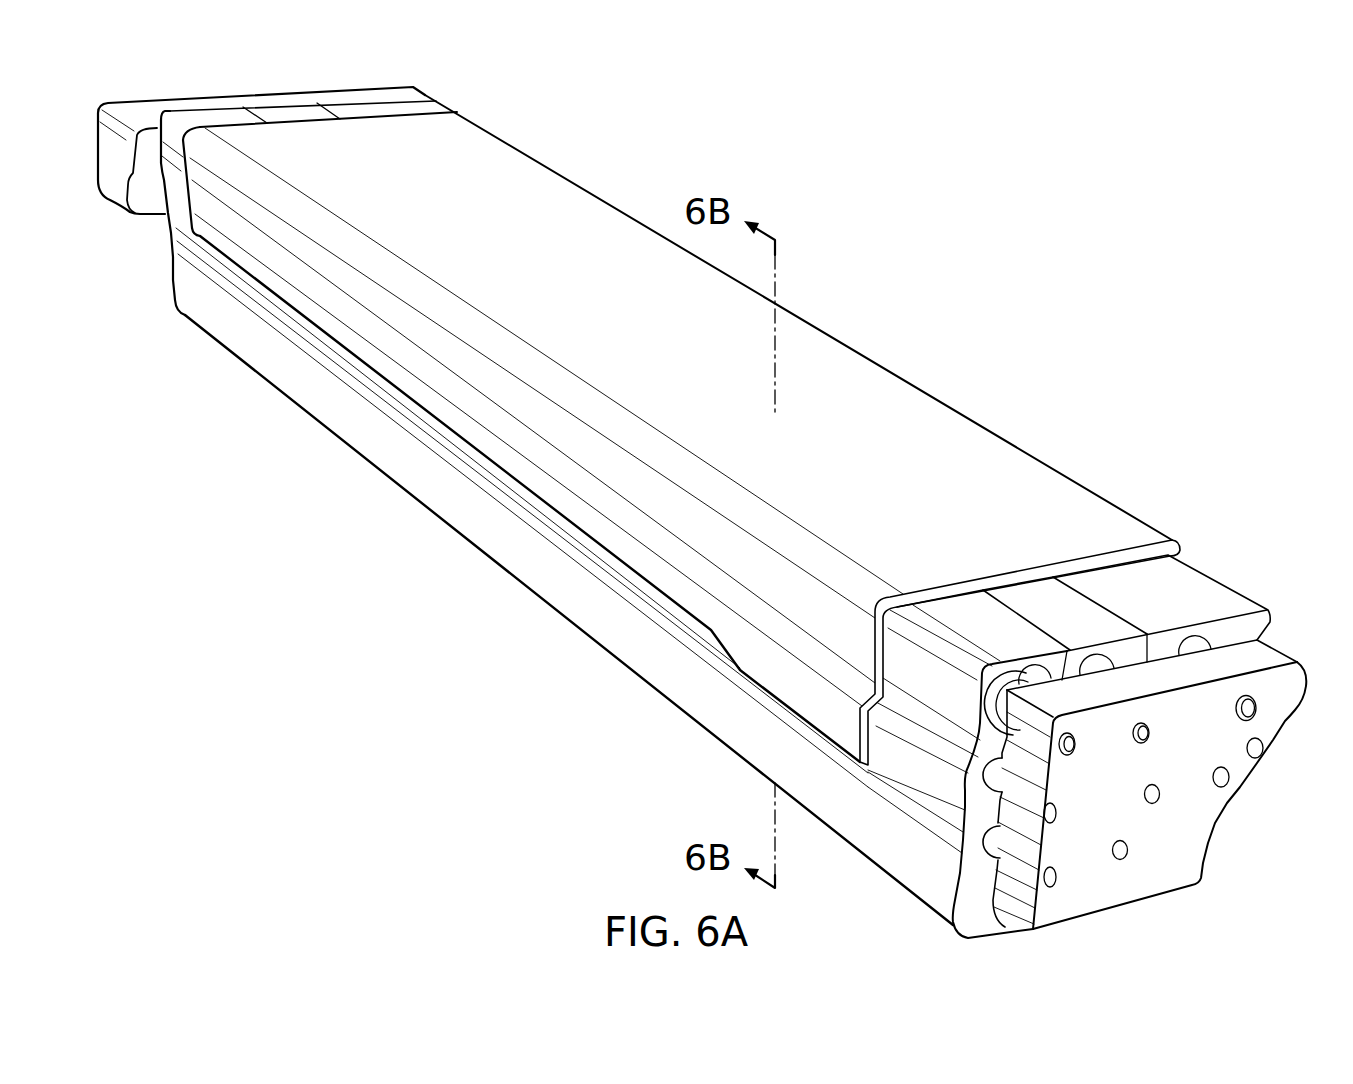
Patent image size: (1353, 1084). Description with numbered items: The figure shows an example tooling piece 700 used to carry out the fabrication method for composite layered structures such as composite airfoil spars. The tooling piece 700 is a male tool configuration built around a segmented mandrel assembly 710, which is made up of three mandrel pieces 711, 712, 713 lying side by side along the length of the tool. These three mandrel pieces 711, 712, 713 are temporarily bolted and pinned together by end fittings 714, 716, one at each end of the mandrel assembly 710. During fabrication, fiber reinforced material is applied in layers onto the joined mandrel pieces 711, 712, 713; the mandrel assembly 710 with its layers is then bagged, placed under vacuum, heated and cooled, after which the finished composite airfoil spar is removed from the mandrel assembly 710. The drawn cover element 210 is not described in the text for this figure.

The tooling piece 700 is at (702, 503).
The cover sheet 210 is at (940, 432).
The segmented mandrel assembly 710 is at (588, 636).
The mandrel piece 711 is at (1185, 582).
The mandrel piece 712 is at (1033, 590).
The mandrel piece 713 is at (958, 607).
The end fitting 714 is at (1137, 882).
The end fitting 716 is at (143, 110).